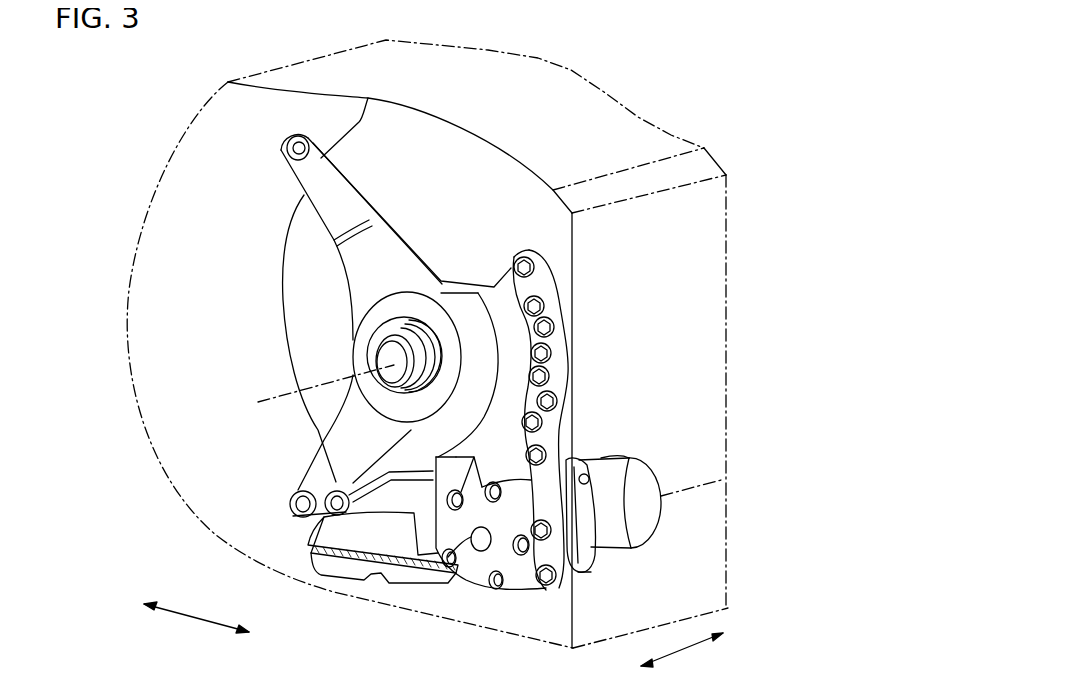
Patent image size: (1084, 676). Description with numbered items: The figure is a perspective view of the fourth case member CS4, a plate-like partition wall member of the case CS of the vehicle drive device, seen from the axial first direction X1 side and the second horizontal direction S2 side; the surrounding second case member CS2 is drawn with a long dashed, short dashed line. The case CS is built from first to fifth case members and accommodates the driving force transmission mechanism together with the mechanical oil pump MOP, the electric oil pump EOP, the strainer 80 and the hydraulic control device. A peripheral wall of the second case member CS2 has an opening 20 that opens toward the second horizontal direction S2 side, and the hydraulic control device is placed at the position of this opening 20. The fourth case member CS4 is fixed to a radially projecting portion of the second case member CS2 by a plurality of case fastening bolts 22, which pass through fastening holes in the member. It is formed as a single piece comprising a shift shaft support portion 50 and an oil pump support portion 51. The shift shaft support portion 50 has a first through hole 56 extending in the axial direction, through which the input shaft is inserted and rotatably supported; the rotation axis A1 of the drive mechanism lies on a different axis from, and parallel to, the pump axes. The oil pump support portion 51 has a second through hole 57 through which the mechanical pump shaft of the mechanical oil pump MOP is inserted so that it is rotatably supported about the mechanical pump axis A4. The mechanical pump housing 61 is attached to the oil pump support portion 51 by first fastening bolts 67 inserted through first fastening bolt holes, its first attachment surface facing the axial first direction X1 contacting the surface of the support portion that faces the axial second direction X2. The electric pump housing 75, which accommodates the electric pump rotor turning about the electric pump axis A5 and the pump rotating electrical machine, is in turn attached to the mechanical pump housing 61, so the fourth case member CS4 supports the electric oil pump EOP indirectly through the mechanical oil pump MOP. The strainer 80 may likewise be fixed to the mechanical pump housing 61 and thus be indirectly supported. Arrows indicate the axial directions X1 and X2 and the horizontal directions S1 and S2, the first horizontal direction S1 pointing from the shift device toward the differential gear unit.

The case CS is at (167, 205).
The second case member CS2 is at (648, 122).
The fourth case member CS4 is at (370, 435).
The opening 20 is at (690, 233).
The shift shaft support portion 50 is at (352, 292).
The first through hole 56 is at (388, 354).
The rotation axis A1 is at (272, 404).
The case fastening bolts 22 is at (535, 262).
The first fastening bolts 67 is at (470, 478).
The electric pump housing 75 is at (628, 458).
The electric pump axis A5 is at (677, 490).
The electric oil pump EOP is at (636, 545).
The mechanical pump housing 61 is at (593, 553).
The mechanical oil pump MOP is at (581, 574).
The strainer 80 is at (357, 553).
The mechanical pump axis A4 is at (450, 572).
The second through hole 57 is at (480, 553).
The oil pump support portion 51 is at (520, 573).
The first horizontal direction S1 is at (179, 613).
The second horizontal direction S2 is at (259, 638).
The axial first direction X1 is at (664, 654).
The axial second direction X2 is at (735, 639).